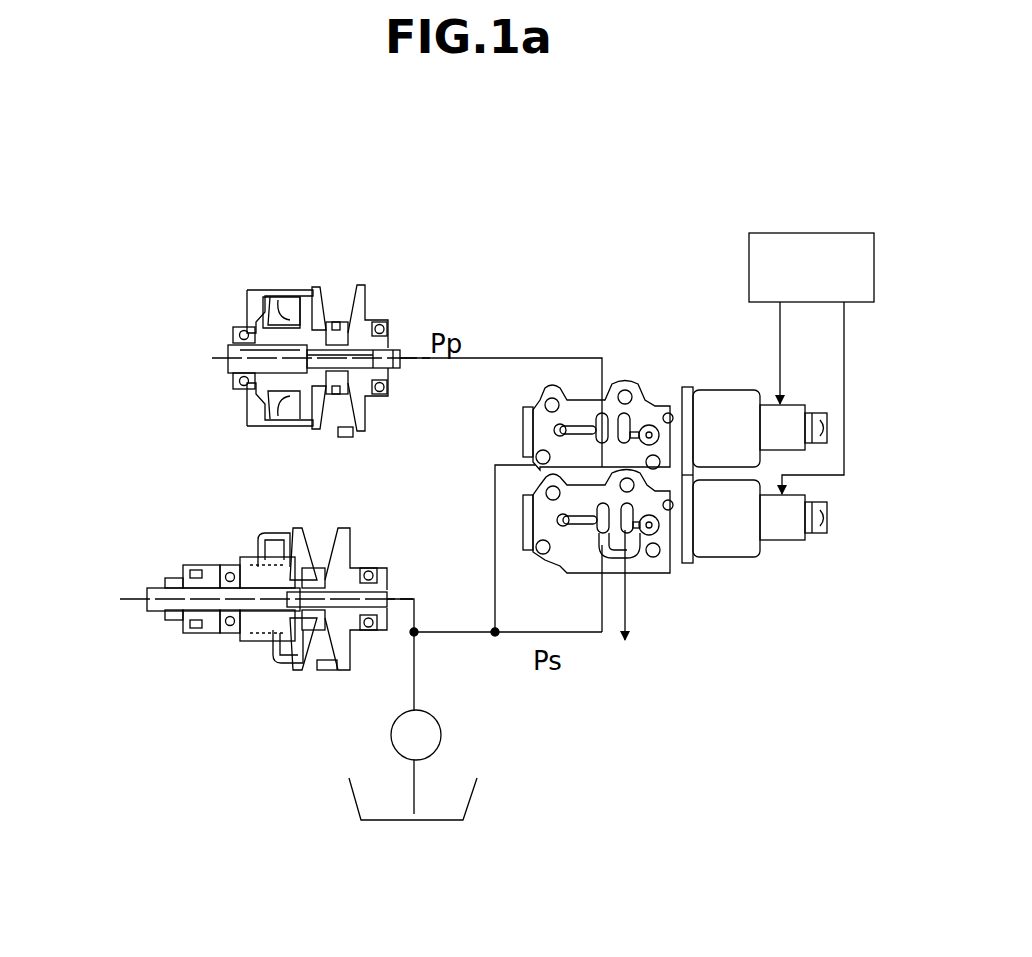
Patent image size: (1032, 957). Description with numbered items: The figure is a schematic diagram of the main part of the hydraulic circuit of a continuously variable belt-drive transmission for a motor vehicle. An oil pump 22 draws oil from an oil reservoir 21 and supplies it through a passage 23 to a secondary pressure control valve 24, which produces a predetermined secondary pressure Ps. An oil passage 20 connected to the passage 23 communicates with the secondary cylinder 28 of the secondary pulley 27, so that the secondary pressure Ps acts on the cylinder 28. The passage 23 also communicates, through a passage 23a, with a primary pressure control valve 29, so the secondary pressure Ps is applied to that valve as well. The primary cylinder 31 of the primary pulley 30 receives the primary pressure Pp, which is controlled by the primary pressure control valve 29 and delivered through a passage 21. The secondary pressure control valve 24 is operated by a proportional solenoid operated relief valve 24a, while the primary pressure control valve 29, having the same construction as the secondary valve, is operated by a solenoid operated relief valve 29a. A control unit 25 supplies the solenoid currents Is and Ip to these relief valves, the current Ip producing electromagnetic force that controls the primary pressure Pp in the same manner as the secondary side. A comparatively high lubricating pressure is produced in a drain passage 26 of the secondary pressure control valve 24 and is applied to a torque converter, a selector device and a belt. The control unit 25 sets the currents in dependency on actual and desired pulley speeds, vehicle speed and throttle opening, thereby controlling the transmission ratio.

The oil passage 20 is at (407, 598).
The oil reservoir 21 is at (581, 357).
The oil pump 22 is at (442, 729).
The passage 23 is at (460, 634).
The passage 23a is at (495, 522).
The secondary pressure control valve 24 is at (568, 574).
The proportional solenoid operated relief valve 24a is at (718, 560).
The control unit 25 is at (782, 233).
The drain passage 26 is at (628, 583).
The secondary pulley 27 is at (325, 546).
The secondary cylinder 28 is at (268, 546).
The primary pressure control valve 29 is at (650, 400).
The solenoid operated relief valve 29a is at (725, 390).
The primary pulley 30 is at (329, 291).
The primary cylinder 31 is at (287, 306).